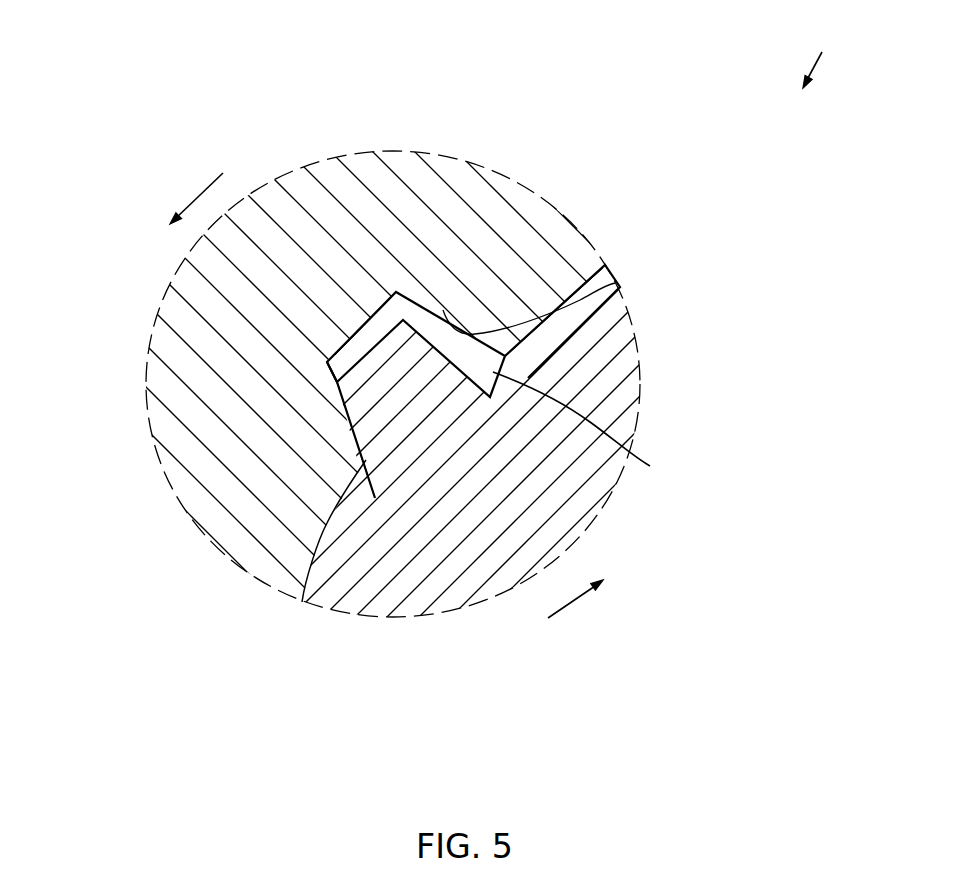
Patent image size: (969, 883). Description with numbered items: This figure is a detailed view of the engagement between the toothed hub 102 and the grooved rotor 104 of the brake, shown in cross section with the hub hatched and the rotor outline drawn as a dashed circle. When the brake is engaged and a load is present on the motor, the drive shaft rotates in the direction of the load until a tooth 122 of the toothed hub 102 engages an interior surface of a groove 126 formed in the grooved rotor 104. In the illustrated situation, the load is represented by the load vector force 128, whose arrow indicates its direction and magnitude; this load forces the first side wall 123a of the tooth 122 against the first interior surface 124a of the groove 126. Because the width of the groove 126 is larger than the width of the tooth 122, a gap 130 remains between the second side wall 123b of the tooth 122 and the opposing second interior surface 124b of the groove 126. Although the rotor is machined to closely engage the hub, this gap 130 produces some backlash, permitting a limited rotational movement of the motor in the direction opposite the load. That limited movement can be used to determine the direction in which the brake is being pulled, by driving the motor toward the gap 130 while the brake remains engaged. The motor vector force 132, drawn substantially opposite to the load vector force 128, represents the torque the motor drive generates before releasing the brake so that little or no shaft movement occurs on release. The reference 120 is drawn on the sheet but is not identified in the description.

The toothed hub 102 is at (558, 495).
The grooved rotor 104 is at (537, 225).
The insertion direction 120 is at (830, 54).
The tooth 122 is at (396, 412).
The first side wall 123a is at (358, 467).
The second side wall 123b is at (610, 280).
The first interior surface 124a is at (360, 457).
The second interior surface 124b is at (443, 310).
The groove 126 is at (370, 310).
The load vector force 128 is at (204, 193).
The gap 130 is at (650, 466).
The motor vector force 132 is at (577, 602).